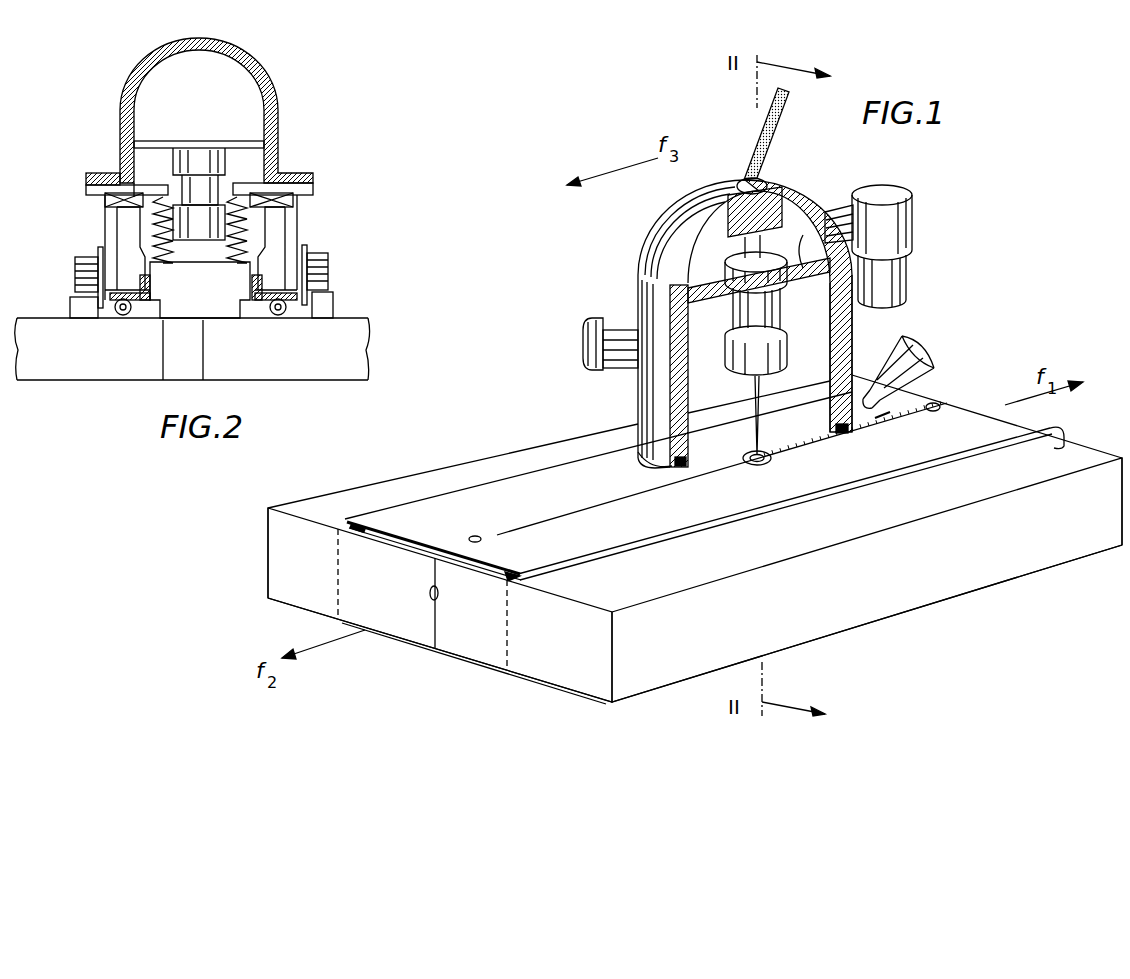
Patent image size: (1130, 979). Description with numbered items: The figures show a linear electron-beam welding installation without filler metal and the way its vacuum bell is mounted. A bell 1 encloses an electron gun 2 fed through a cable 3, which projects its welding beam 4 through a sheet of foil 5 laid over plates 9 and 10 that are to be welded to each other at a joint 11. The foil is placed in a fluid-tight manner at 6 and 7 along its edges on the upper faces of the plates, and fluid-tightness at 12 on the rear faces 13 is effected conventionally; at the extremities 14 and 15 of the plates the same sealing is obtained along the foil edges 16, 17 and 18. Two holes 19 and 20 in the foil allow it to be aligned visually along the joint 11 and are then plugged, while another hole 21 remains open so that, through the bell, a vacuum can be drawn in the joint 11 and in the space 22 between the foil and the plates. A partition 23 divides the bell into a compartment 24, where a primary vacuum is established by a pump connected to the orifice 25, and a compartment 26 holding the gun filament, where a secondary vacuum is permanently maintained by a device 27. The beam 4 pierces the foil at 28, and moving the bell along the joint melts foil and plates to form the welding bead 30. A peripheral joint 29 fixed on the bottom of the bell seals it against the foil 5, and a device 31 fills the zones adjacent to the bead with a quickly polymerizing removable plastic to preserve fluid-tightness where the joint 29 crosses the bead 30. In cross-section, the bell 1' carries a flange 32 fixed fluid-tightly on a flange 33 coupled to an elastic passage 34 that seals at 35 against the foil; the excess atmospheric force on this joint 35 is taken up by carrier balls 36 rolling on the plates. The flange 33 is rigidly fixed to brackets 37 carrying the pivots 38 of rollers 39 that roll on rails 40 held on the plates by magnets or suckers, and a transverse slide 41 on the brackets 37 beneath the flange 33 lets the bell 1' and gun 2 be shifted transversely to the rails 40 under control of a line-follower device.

In FIG. 1, the bell 1 is at (731, 324).
In FIG. 2, the bell 1' is at (217, 117).
In FIG. 1, the electron gun 2 is at (742, 322).
In FIG. 1, the cable 3 is at (755, 150).
In FIG. 1, the welding beam 4 is at (747, 423).
In FIG. 1, the sheet of foil 5 is at (565, 477).
In FIG. 2, the sheet of foil 5 is at (132, 320).
In FIG. 1, the fluid-tight edge placement 6 is at (358, 530).
In FIG. 1, the fluid-tight edge placement 7 is at (507, 580).
In FIG. 1, the plate 9 is at (285, 525).
In FIG. 1, the plate 10 is at (587, 683).
In FIG. 1, the joint 11 is at (427, 597).
In FIG. 1, the rear fluid-tightness location 12 is at (433, 643).
In FIG. 1, the rear faces 13 is at (927, 608).
In FIG. 1, the extremity of the plates 14 is at (282, 584).
In FIG. 1, the extremity of the plates 15 is at (1097, 450).
In FIG. 1, the foil edge 16 is at (328, 590).
In FIG. 1, the foil edge 17 is at (507, 623).
In FIG. 1, the foil edge 18 is at (350, 617).
In FIG. 1, the hole 19 is at (477, 537).
In FIG. 1, the hole 20 is at (940, 407).
In FIG. 1, the hole 21 is at (773, 448).
In FIG. 1, the space 22 is at (407, 545).
In FIG. 1, the partition 23 is at (800, 262).
In FIG. 1, the compartment 24 is at (807, 337).
In FIG. 1, the orifice 25 is at (585, 335).
In FIG. 1, the compartment 26 is at (722, 238).
In FIG. 1, the device 27 is at (843, 220).
In FIG. 1, the piercing point 28 is at (762, 470).
In FIG. 1, the peripheral joint 29 is at (678, 462).
In FIG. 1, the welding bead 30 is at (880, 417).
In FIG. 1, the device 31 is at (915, 352).
In FIG. 2, the flange 32 is at (303, 177).
In FIG. 2, the flange 33 is at (316, 188).
In FIG. 2, the elastic passage 34 is at (130, 196).
In FIG. 2, the joint 35 is at (163, 320).
In FIG. 2, the carrier balls 36 is at (105, 310).
In FIG. 2, the brackets 37 is at (288, 212).
In FIG. 2, the pivots 38 is at (97, 250).
In FIG. 2, the rollers 39 is at (82, 272).
In FIG. 2, the rails 40 is at (320, 305).
In FIG. 2, the transverse slide 41 is at (300, 202).